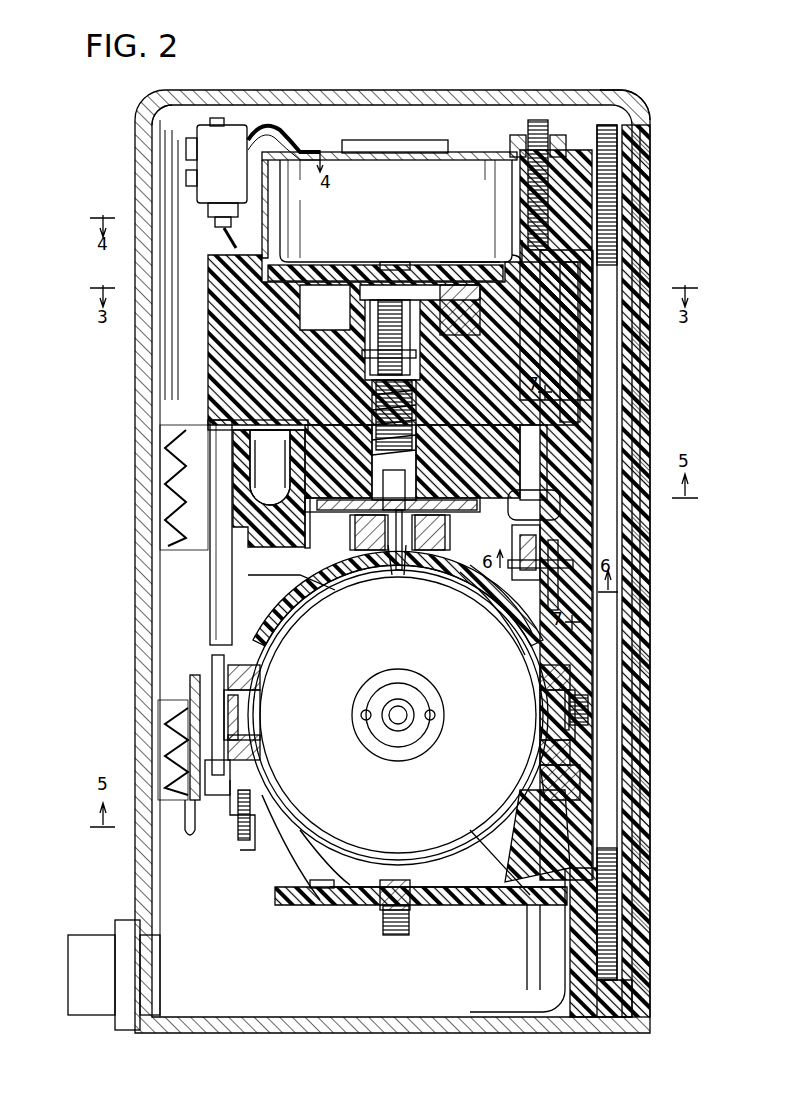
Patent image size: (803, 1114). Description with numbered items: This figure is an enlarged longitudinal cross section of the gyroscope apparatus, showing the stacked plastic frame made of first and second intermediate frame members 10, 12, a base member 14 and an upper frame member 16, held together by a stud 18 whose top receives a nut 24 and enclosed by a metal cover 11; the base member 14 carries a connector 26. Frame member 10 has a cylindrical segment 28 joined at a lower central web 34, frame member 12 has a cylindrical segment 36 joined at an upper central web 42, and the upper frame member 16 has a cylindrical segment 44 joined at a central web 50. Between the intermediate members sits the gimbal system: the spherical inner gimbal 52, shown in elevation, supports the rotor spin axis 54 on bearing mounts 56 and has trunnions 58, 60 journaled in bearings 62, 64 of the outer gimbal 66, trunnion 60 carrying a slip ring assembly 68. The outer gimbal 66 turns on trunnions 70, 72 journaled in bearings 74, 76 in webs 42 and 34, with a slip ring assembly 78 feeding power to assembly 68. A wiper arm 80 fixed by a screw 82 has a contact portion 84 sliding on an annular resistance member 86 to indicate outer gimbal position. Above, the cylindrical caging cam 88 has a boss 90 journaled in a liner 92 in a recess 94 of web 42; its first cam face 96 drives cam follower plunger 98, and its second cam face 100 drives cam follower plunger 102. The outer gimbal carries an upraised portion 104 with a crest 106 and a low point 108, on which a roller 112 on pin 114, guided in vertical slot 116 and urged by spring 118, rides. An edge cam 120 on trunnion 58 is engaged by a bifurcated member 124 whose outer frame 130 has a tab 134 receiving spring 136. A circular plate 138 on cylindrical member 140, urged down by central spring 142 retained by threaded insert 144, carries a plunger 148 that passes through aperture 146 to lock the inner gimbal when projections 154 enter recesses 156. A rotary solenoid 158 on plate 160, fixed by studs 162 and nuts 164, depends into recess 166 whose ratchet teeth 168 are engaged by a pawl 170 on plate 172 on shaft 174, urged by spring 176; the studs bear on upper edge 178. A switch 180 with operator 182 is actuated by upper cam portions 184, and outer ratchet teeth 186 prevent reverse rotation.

The first intermediate frame member 10 is at (575, 835).
The metal cover 11 is at (160, 108).
The second intermediate frame member 12 is at (580, 508).
The base member 14 is at (656, 1008).
The upper frame member 16 is at (628, 232).
The longitudinally extending stud 18 is at (630, 115).
The nut 24 is at (620, 142).
The connector 26 is at (92, 1015).
The cylindrical segment 28 is at (540, 900).
The lower central web 34 is at (470, 905).
The cylindrical segment 36 is at (592, 552).
The upper central web 42 is at (185, 510).
The cylindrical segment 44 is at (636, 262).
The central web 50 is at (520, 178).
The inner gimbal 52 is at (222, 668).
The axis of gyroscope rotor 54 is at (385, 718).
The bearing mounts 56 is at (415, 695).
The trunnion 58 is at (250, 718).
The trunnion 60 is at (542, 712).
The bearing 62 is at (248, 758).
The bearing 64 is at (545, 680).
The outer gimbal 66 is at (505, 835).
The slip ring assembly 68 is at (578, 694).
The trunnion 70 is at (385, 514).
The trunnion 72 is at (415, 900).
The bearing 74 is at (402, 560).
The bearing 76 is at (455, 872).
The slip ring assembly 78 is at (398, 935).
The wiper arm 80 is at (284, 848).
The screw 82 is at (255, 840).
The contact portion 84 is at (320, 878).
The annular resistance member 86 is at (308, 884).
The caging cam 88 is at (565, 358).
The lower perpendicular boss 90 is at (268, 525).
The liner 92 is at (282, 462).
The cylindrical recess 94 is at (260, 540).
The first cam face 96 is at (212, 425).
The cam follower plunger 98 is at (214, 565).
The second cam face 100 is at (520, 400).
The cam follower plunger 102 is at (540, 445).
The upraised portion 104 is at (262, 608).
The crest 106 is at (268, 575).
The low point 108 is at (508, 612).
The roller 112 is at (518, 560).
The pin 114 is at (572, 580).
The vertical slot 116 is at (575, 532).
The spring 118 is at (515, 625).
The edge cam 120 is at (208, 770).
The bifurcated member 124 is at (190, 675).
The outer frame 130 is at (178, 740).
The tab 134 is at (195, 840).
The spring 136 is at (170, 718).
The circular plate 138 is at (315, 548).
The cylindrical member 140 is at (445, 525).
The central spring 142 is at (418, 468).
The threaded insert 144 is at (405, 365).
The central aperture 146 is at (390, 575).
The plunger 148 is at (405, 575).
The upper projections 154 is at (355, 545).
The recesses 156 is at (422, 482).
The rotary solenoid 158 is at (402, 158).
The plate 160 is at (328, 152).
The studs 162 is at (545, 125).
The nuts 164 is at (520, 135).
The central recess 166 is at (270, 262).
The ratchet teeth 168 is at (510, 260).
The pawl 170 is at (290, 272).
The plate 172 is at (452, 265).
The shaft 174 is at (395, 265).
The spring 176 is at (330, 360).
The upper edge 178 is at (240, 250).
The switch 180 is at (212, 140).
The operator 182 is at (222, 220).
The upper cam portions 184 is at (224, 232).
The ratchet teeth 186 is at (212, 290).